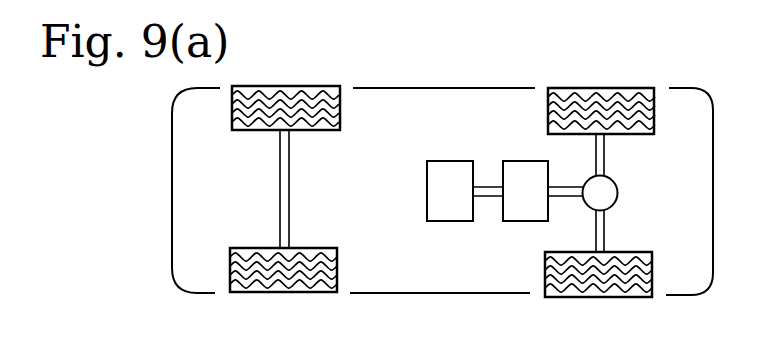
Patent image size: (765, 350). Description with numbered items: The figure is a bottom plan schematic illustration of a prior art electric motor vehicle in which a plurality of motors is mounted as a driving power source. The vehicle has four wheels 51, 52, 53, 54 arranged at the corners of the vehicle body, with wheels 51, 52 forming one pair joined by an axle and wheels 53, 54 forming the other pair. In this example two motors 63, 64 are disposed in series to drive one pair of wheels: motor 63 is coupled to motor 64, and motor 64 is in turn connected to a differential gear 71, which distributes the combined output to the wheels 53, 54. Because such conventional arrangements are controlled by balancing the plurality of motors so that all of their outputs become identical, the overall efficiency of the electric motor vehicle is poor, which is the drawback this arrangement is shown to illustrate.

The wheel 51 is at (294, 86).
The wheel 52 is at (295, 293).
The wheel 53 is at (590, 88).
The wheel 54 is at (614, 298).
The motor 63 is at (436, 203).
The motor 64 is at (511, 203).
The differential gear 71 is at (618, 193).